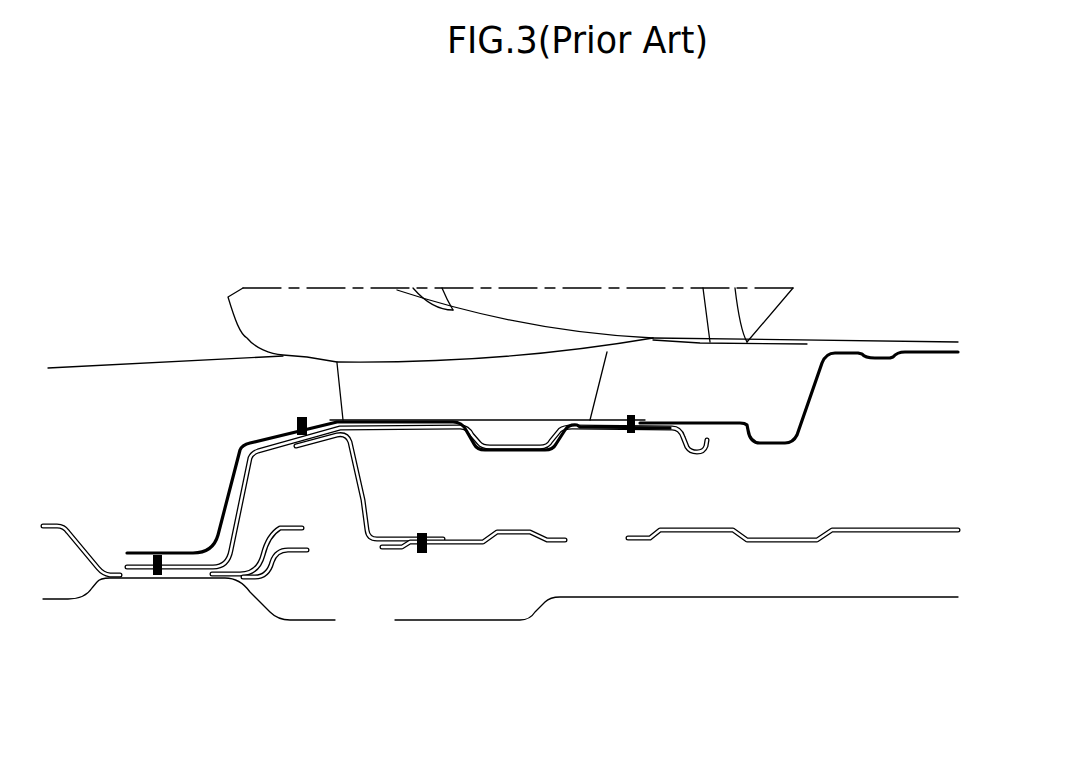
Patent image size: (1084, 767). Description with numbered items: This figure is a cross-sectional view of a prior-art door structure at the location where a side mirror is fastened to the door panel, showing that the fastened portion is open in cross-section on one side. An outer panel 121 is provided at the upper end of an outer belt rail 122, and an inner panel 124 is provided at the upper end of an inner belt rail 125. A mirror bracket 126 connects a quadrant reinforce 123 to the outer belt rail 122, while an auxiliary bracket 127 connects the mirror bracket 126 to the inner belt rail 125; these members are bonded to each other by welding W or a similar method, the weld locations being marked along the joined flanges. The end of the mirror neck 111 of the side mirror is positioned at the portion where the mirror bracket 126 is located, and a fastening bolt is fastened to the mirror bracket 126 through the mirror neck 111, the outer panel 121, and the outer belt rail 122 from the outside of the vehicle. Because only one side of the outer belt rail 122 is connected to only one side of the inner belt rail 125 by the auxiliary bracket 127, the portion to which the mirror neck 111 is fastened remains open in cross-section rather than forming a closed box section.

The mirror neck 111 is at (602, 308).
The outer panel 121 is at (807, 343).
The outer belt rail 122 is at (815, 388).
The quadrant reinforce 123 is at (66, 527).
The inner panel 124 is at (713, 598).
The inner belt rail 125 is at (852, 533).
The mirror bracket 126 is at (379, 420).
The auxiliary bracket 127 is at (358, 497).
The welding W is at (394, 477).